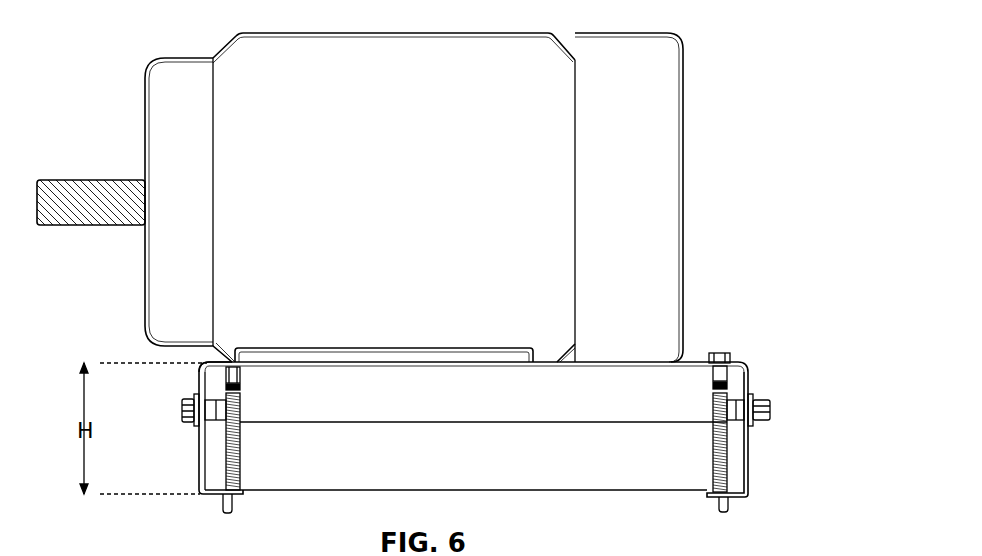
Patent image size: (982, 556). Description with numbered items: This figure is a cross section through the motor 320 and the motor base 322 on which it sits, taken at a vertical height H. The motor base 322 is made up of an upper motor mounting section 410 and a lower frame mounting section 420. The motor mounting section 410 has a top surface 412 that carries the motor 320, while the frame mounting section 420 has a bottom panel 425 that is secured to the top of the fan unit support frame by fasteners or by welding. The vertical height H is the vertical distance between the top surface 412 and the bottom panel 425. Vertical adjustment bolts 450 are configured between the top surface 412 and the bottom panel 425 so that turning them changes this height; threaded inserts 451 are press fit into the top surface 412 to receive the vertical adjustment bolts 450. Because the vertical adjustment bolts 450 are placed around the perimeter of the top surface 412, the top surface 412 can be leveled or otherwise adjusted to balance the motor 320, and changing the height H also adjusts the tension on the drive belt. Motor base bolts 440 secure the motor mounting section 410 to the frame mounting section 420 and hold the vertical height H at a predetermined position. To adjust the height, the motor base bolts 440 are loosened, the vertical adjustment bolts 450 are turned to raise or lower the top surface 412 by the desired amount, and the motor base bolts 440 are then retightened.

The motor 320 is at (447, 30).
The motor base 322 is at (760, 443).
The motor mounting section 410 is at (207, 366).
The top surface 412 is at (695, 362).
The frame mounting section 420 is at (197, 453).
The bottom panel 425 is at (250, 490).
The motor base bolts 440 is at (182, 410).
The vertical adjustment bolts 450 is at (240, 433).
The threaded inserts 451 is at (240, 370).